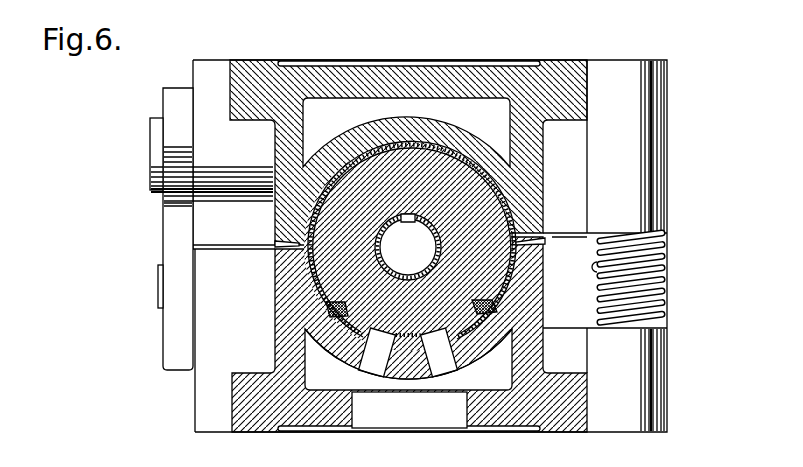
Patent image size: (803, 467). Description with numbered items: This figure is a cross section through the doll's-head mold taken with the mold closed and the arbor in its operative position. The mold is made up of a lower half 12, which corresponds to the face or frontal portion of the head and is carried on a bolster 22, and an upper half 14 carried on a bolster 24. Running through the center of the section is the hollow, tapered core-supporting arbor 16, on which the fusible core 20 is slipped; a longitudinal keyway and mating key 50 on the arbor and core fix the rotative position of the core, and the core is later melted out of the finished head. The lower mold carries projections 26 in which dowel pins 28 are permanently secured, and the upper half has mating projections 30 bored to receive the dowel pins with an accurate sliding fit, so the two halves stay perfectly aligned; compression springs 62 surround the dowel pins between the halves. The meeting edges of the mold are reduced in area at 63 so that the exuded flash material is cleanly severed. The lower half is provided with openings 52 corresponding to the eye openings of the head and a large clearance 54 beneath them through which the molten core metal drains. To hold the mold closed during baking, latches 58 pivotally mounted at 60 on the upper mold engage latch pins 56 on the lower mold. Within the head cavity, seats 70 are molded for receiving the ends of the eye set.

The lower half 12 is at (343, 340).
The upper half 14 is at (413, 122).
The core-supporting arbor 16 is at (433, 264).
The fusible core 20 is at (480, 210).
The bolster 22 is at (493, 404).
The bolster 24 is at (330, 82).
The projections 26 is at (662, 383).
The dowel pins 28 is at (658, 268).
The mating projections 30 is at (652, 193).
The keyway and mating key 50 is at (398, 232).
The openings 52 is at (440, 364).
The clearance 54 is at (374, 412).
The latch pins 56 is at (160, 283).
The latches 58 is at (170, 323).
The pivot 60 is at (148, 147).
The compression springs 62 is at (596, 270).
The meeting edges 63 is at (287, 243).
The seats 70 is at (336, 311).